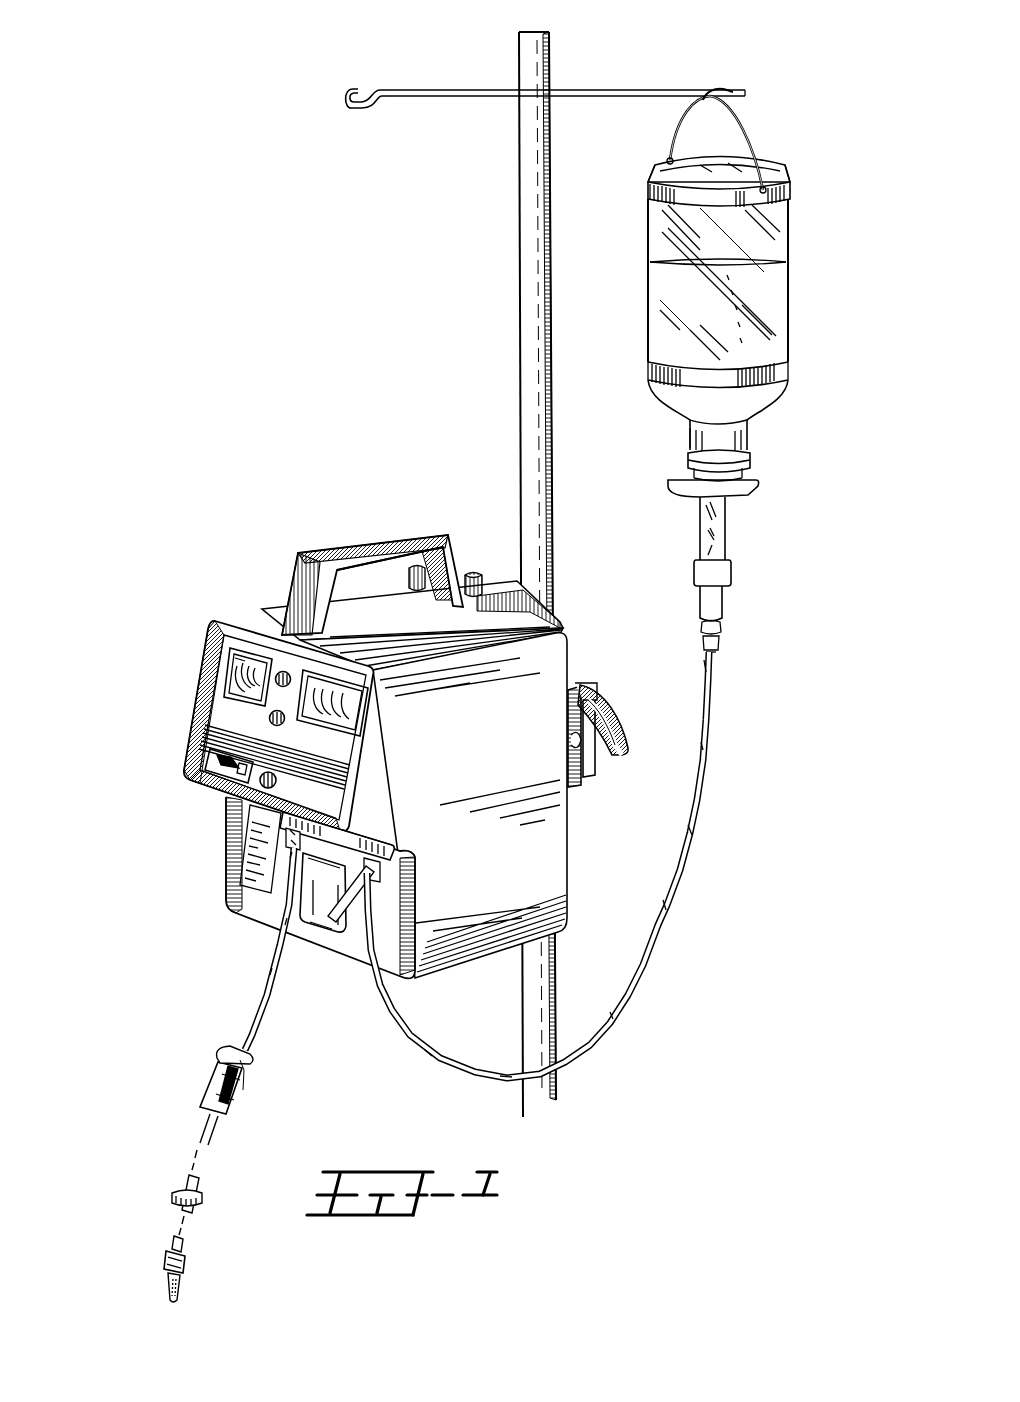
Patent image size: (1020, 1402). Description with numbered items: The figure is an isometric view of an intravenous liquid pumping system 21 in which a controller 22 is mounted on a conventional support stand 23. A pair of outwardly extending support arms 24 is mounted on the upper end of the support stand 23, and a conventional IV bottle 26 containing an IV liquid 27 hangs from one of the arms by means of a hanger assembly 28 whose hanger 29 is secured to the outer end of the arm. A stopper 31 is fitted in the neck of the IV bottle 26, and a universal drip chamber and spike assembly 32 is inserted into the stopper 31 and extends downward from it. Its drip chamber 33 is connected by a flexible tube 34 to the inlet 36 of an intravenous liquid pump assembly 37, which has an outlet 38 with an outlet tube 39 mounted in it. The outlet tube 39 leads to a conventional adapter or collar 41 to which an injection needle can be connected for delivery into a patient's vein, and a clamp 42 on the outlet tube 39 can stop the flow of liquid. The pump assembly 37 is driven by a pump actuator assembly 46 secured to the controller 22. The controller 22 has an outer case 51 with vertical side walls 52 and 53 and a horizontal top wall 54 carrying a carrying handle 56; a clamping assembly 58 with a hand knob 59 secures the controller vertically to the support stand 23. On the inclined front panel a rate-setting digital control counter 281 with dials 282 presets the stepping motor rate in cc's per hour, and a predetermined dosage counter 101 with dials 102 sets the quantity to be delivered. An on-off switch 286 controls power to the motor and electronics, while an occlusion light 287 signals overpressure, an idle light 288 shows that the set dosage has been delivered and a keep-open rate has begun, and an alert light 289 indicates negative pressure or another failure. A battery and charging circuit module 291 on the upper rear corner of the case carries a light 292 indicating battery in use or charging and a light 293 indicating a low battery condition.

The intravenous liquid pumping system 21 is at (330, 487).
The controller 22 is at (253, 548).
The support stand 23 is at (560, 1083).
The support arms 24 is at (722, 95).
The IV bottle 26 is at (788, 265).
The IV liquid 27 is at (660, 318).
The hanger assembly 28 is at (786, 187).
The hanger 29 is at (748, 128).
The stopper 31 is at (688, 460).
The universal drip chamber and spike assembly 32 is at (745, 552).
The drip chamber 33 is at (703, 505).
The flexible tube 34 is at (662, 920).
The inlet 36 is at (370, 875).
The intravenous liquid pump assembly 37 is at (316, 935).
The outlet 38 is at (300, 846).
The outlet tube 39 is at (262, 1003).
The adapter or collar 41 is at (167, 1257).
The clamp 42 is at (218, 1052).
The pump actuator assembly 46 is at (320, 822).
The outer case 51 is at (376, 716).
The vertical side wall 52 is at (560, 848).
The vertical side wall 53 is at (190, 746).
The horizontal top wall 54 is at (490, 625).
The carrying handle 56 is at (443, 535).
The clamping assembly 58 is at (612, 712).
The hand knob 59 is at (617, 736).
The predetermined dosage counter 101 is at (360, 713).
The dials 102 is at (328, 692).
The rate-setting digital control counter 281 is at (215, 624).
The dials 282 is at (232, 666).
The on-off switch 286 is at (262, 784).
The occlusion light 287 is at (225, 780).
The idle light 288 is at (270, 718).
The alert light 289 is at (280, 671).
The battery and charging circuit module 291 is at (504, 577).
The light 292 is at (413, 566).
The light 293 is at (473, 574).